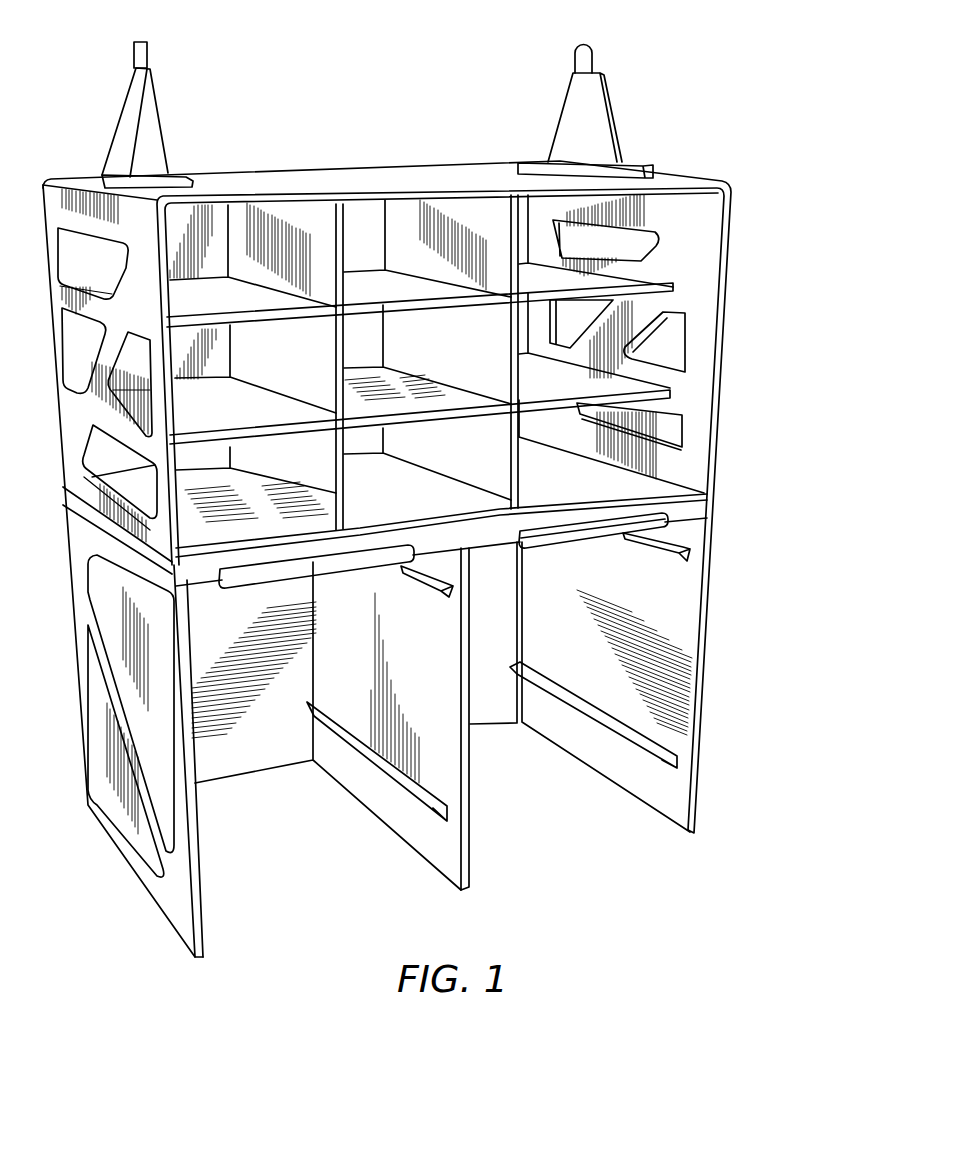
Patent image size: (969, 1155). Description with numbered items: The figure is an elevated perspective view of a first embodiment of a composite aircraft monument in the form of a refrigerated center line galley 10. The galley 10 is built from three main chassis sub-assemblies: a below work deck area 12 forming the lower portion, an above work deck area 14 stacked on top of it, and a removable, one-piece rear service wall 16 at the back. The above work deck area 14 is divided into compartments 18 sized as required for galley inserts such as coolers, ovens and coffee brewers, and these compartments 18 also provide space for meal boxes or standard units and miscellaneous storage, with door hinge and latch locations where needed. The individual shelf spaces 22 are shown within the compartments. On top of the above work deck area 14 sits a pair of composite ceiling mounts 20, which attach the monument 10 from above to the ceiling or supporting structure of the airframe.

The refrigerated center line galley 10 is at (775, 290).
The below work deck area 12 is at (726, 645).
The above work deck area 14 is at (745, 333).
The rear service wall 16 is at (256, 799).
The compartments 18 is at (308, 232).
The composite ceiling mounts 20 is at (176, 109).
The shelf compartment 22 is at (309, 369).